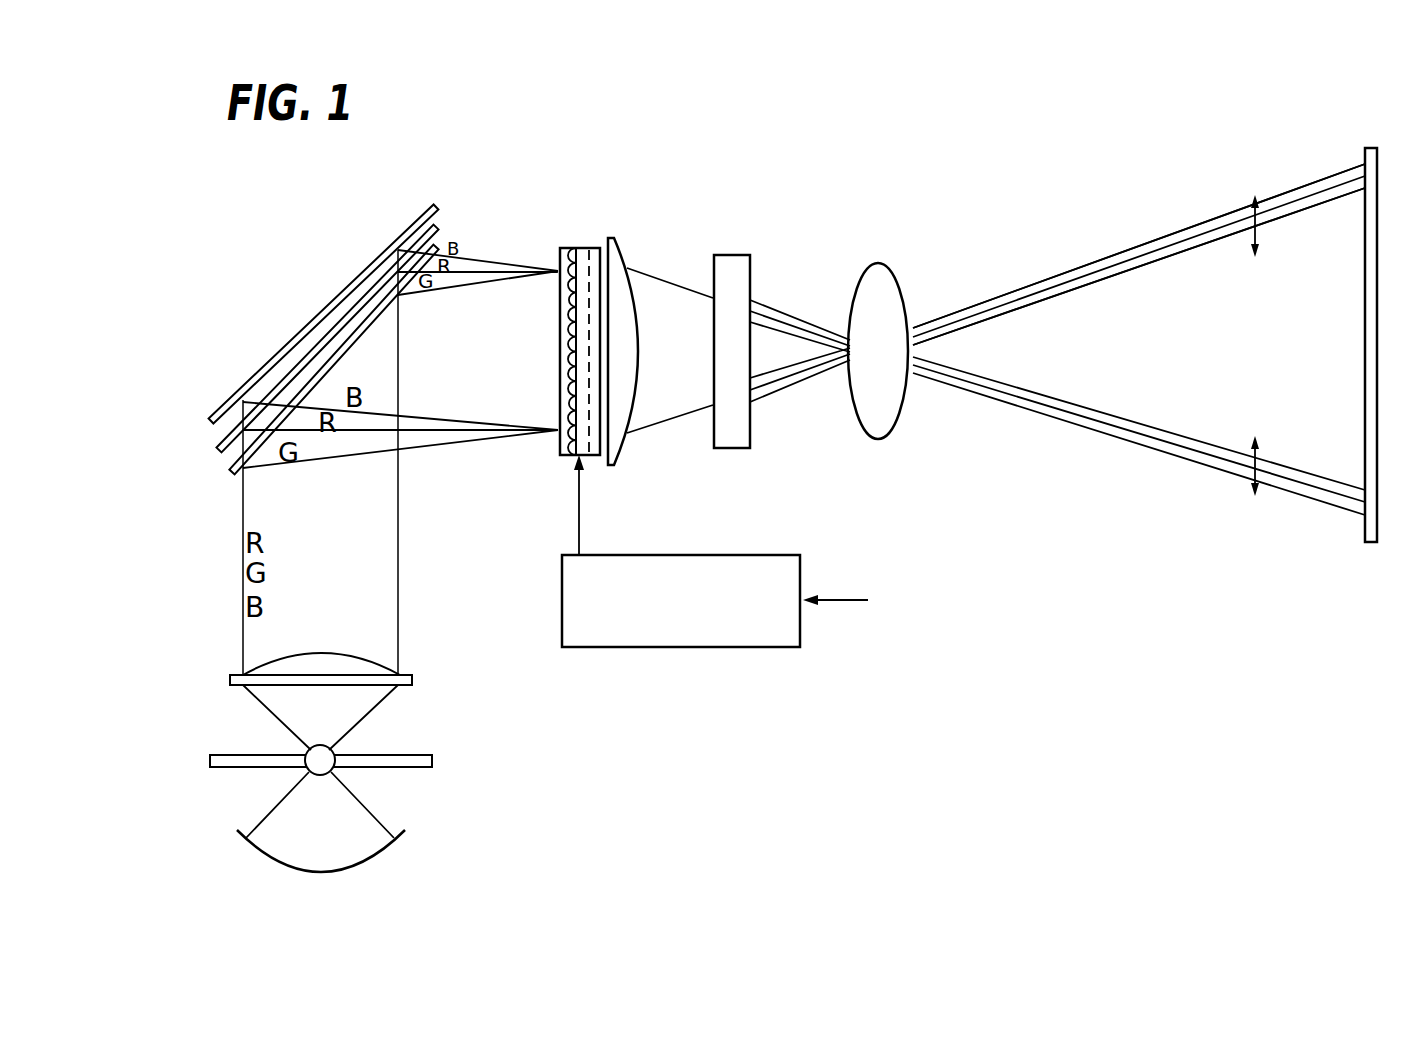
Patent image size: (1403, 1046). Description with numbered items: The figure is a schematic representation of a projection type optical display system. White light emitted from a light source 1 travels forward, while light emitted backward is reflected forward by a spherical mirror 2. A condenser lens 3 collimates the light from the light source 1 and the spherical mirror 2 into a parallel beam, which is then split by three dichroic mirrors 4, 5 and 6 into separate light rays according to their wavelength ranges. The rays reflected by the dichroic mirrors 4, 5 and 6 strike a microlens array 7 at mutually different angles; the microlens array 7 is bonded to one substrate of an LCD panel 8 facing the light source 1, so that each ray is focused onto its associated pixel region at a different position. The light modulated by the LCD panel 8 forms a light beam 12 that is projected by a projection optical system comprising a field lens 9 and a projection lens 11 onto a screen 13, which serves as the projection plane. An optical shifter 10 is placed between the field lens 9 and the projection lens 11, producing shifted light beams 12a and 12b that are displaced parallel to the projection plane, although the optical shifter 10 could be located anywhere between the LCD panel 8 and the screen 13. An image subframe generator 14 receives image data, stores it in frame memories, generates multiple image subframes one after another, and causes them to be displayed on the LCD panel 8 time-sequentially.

The light source 1 is at (432, 763).
The spherical mirror 2 is at (385, 843).
The condenser lens 3 is at (410, 675).
The dichroic mirror 4 is at (230, 468).
The dichroic mirror 5 is at (217, 445).
The dichroic mirror 6 is at (220, 412).
The microlens array 7 is at (563, 247).
The LCD panel 8 is at (585, 247).
The field lens 9 is at (623, 253).
The optical shifter 10 is at (732, 255).
The projection lens 11 is at (901, 273).
The light beam 12 is at (1133, 254).
The light beam 12a is at (1171, 243).
The light beam 12b is at (1082, 267).
The screen 13 is at (1363, 155).
The image subframe generator 14 is at (608, 647).